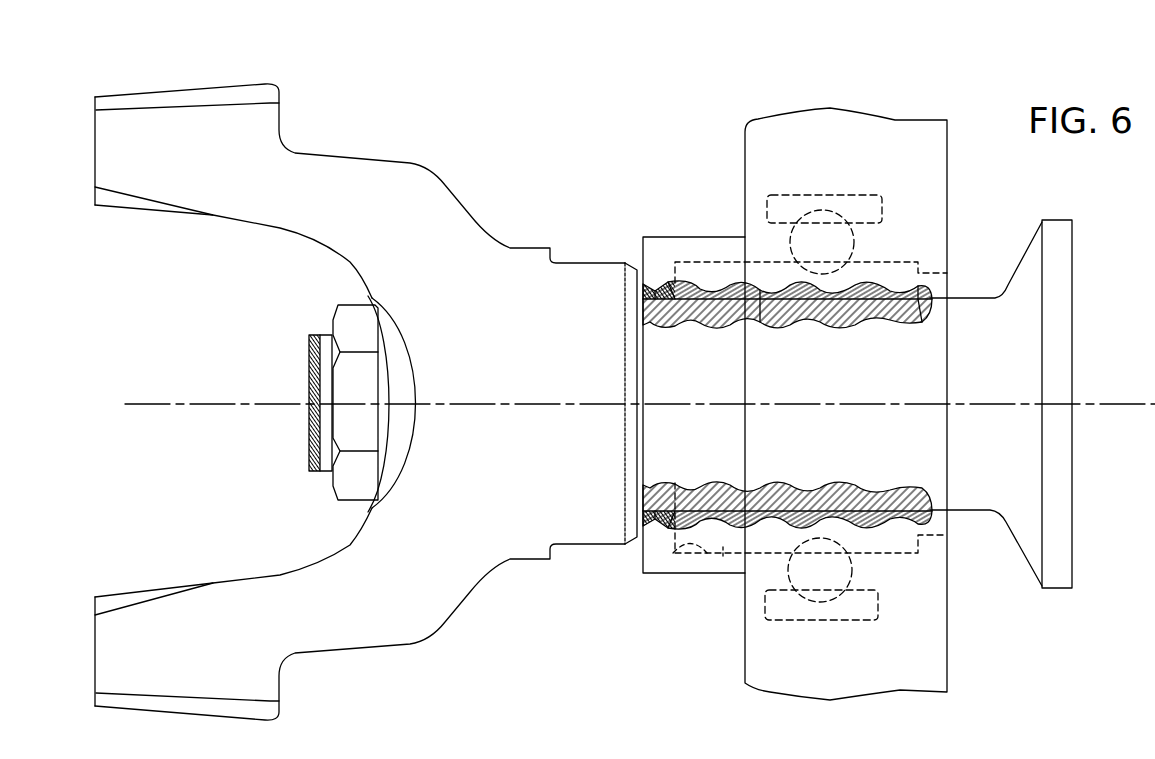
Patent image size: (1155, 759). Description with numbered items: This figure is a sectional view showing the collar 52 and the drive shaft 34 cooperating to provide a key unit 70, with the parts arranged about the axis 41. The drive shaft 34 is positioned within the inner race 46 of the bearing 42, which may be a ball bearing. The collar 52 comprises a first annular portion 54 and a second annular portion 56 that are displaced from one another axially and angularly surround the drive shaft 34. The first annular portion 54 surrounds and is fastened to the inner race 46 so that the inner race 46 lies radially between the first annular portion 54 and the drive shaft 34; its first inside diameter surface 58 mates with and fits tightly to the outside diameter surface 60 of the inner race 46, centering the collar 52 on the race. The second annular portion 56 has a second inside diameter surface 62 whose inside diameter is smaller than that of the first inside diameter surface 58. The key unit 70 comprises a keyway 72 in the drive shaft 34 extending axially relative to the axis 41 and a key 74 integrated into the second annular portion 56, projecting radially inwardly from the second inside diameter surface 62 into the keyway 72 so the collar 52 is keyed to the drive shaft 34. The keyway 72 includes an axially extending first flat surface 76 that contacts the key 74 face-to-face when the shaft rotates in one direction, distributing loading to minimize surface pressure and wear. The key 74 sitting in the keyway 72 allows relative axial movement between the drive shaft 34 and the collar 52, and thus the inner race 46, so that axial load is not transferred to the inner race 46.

The drive shaft 34 is at (1063, 350).
The axis 41 is at (202, 406).
The bearing 42 is at (842, 83).
The inner race 46 is at (950, 268).
The collar 52 is at (652, 206).
The first annular portion 54 is at (718, 245).
The second annular portion 56 is at (653, 260).
The first inside diameter surface 58 is at (663, 565).
The outside diameter surface 60 is at (723, 570).
The second inside diameter surface 62 is at (638, 498).
The key unit 70 is at (713, 308).
The keyway 72 is at (782, 302).
The key 74 is at (677, 314).
The first flat surface 76 is at (833, 313).